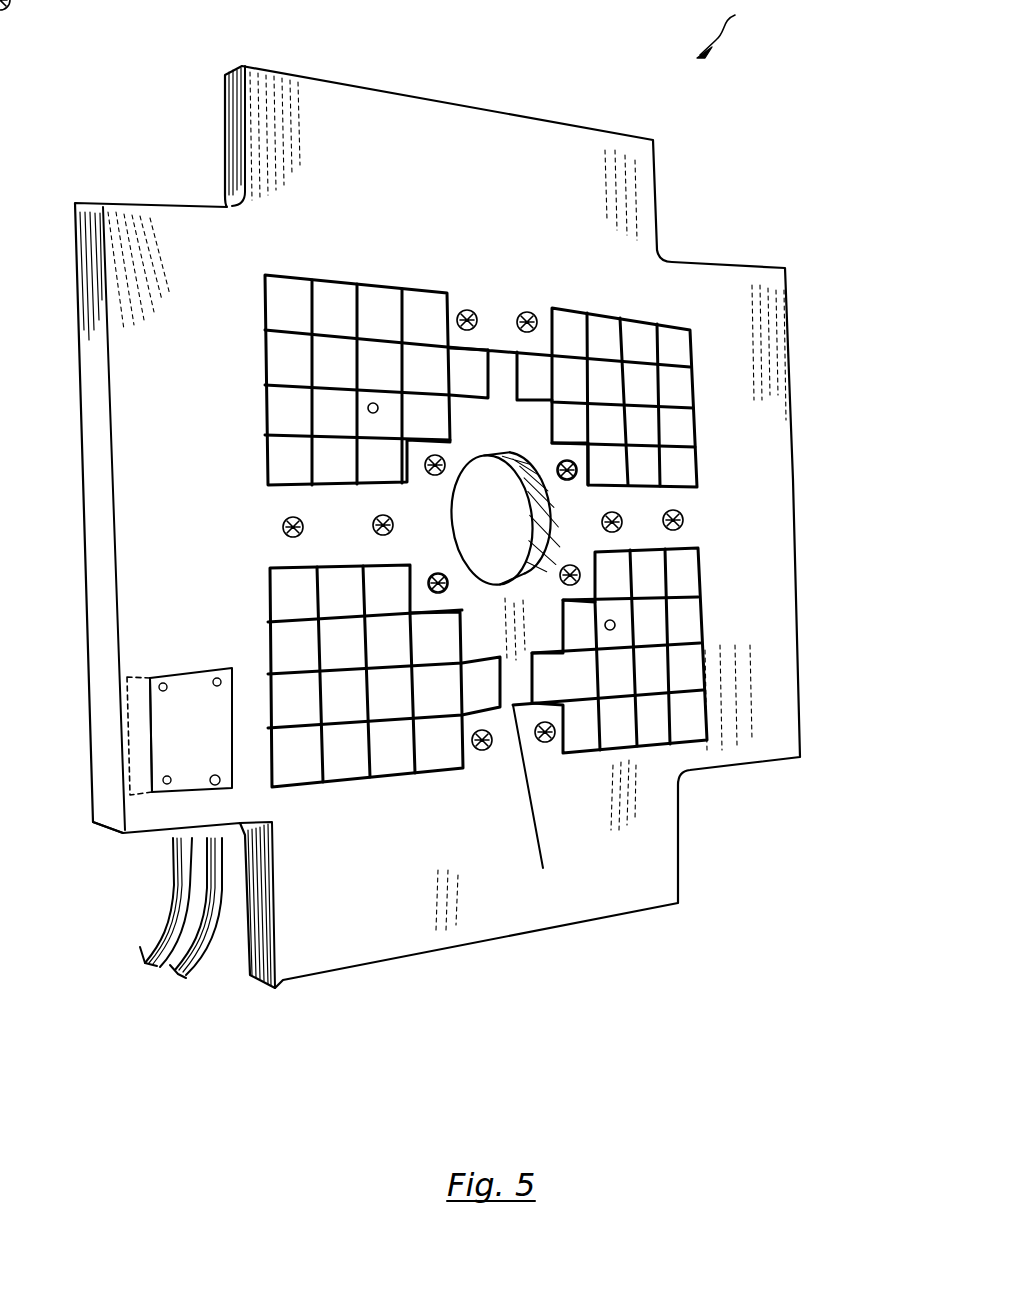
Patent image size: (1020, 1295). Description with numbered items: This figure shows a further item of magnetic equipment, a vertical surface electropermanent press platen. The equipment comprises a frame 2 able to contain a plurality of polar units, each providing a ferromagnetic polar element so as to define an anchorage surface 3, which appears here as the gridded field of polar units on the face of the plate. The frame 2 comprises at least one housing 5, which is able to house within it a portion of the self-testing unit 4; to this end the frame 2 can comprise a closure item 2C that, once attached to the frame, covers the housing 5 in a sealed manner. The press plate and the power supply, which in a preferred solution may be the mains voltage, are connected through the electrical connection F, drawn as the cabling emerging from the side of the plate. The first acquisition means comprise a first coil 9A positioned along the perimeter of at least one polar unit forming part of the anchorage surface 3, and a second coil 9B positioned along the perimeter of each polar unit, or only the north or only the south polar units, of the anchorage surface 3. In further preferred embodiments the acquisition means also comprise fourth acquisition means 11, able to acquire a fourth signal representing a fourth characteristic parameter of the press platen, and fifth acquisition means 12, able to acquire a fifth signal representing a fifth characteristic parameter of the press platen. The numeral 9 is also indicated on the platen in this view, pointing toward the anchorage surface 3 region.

The frame 2 is at (676, 872).
The closure item 2C is at (182, 685).
The anchorage surface 3 is at (678, 673).
The self-testing unit 4 is at (152, 735).
The housing 5 is at (112, 840).
The rib structure 9 is at (554, 531).
The first coil 9A is at (376, 404).
The second coil 9B is at (495, 350).
The fourth acquisition means 11 is at (570, 463).
The fifth acquisition means 12 is at (543, 868).
The electrical connection F is at (175, 1003).